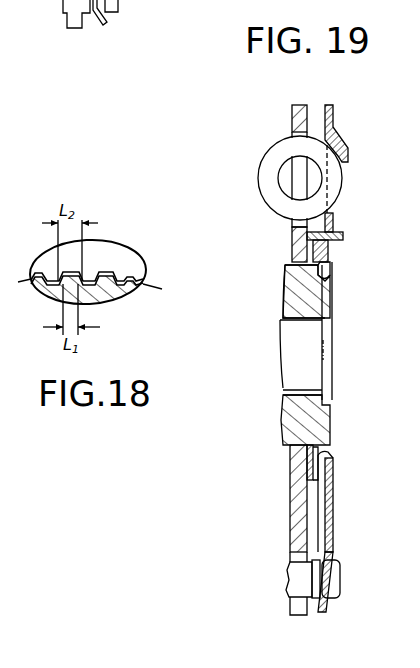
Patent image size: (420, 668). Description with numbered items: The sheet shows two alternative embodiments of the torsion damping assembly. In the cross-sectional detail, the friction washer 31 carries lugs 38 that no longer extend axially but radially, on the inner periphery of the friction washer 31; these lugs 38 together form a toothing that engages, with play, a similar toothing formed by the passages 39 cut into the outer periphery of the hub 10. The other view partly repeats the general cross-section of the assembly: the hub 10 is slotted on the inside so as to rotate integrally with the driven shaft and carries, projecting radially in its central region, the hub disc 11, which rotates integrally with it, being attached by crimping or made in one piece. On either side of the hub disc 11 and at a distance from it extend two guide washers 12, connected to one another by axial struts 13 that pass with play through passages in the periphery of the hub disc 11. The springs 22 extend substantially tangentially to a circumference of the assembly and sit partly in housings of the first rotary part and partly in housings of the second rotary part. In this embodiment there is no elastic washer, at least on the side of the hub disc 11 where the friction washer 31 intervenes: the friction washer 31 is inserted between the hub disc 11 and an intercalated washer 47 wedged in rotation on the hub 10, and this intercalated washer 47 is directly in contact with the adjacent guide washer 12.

In FIG. 18, the hub 10 is at (141, 298).
In FIG. 19, the hub 10 is at (283, 423).
In FIG. 19, the hub disc 11 is at (290, 112).
In FIG. 19, the guide washer 12 is at (336, 118).
In FIG. 19, the axial strut 13 is at (343, 572).
In FIG. 19, the spring 22 is at (274, 150).
In FIG. 18, the friction washer 31 is at (133, 250).
In FIG. 19, the friction washer 31 is at (292, 250).
In FIG. 18, the lug 38 is at (34, 292).
In FIG. 19, the lug 38 is at (345, 236).
In FIG. 18, the passage 39 is at (47, 290).
In FIG. 19, the passage 39 is at (333, 226).
In FIG. 19, the intercalated washer 47 is at (328, 279).